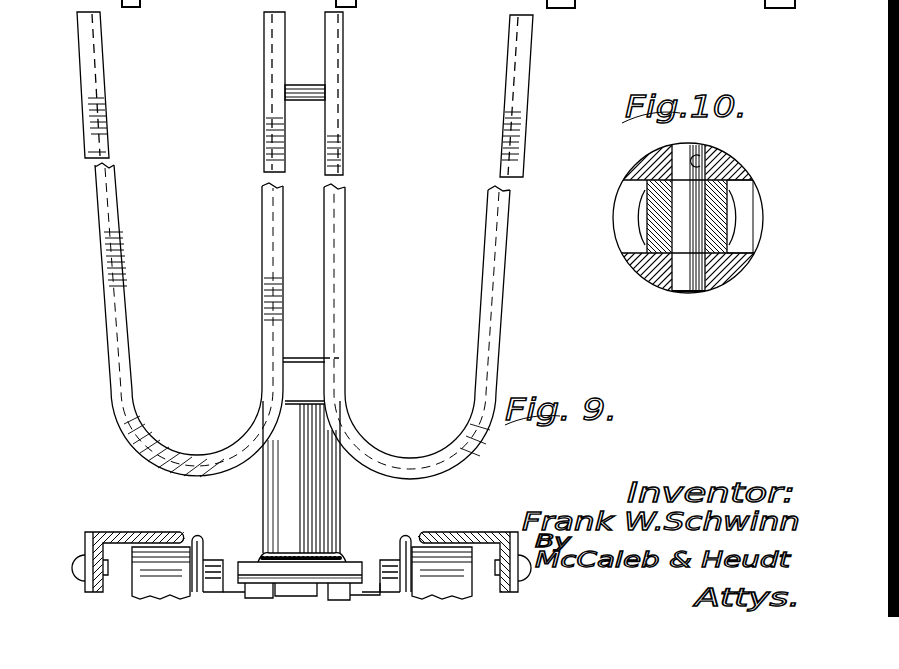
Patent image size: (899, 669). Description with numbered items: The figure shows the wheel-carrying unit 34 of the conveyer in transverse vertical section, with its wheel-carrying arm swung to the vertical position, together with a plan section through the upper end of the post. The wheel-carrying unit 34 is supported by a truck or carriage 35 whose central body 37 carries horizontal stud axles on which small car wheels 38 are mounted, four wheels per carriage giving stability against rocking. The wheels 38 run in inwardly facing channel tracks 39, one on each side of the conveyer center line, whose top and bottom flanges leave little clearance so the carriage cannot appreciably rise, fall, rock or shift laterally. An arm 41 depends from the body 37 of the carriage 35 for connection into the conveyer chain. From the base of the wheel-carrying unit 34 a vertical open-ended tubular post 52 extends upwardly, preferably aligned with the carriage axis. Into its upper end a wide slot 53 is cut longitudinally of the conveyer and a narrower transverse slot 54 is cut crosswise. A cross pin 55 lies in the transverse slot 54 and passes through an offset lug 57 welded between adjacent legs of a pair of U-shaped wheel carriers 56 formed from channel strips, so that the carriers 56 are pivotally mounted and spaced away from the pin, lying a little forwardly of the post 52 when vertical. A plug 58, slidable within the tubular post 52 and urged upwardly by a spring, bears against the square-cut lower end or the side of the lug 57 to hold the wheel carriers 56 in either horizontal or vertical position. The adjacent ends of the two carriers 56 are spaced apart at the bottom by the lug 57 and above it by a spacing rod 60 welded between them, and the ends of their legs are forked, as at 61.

In FIG. 9, the wheel-carrying unit 34 is at (350, 529).
In FIG. 9, the truck or carriage 35 is at (253, 576).
In FIG. 9, the central body 37 is at (345, 572).
In FIG. 9, the car wheel 38 is at (302, 573).
In FIG. 9, the channel track 39 is at (150, 533).
In FIG. 9, the arm 41 is at (292, 595).
In FIG. 9, the tubular post 52 is at (286, 476).
In FIG. 10, the tubular post 52 is at (722, 276).
In FIG. 10, the wide slot 53 is at (740, 183).
In FIG. 10, the transverse slot 54 is at (696, 158).
In FIG. 10, the cross pin 55 is at (683, 282).
In FIG. 9, the U-shaped wheel carrier 56 is at (262, 271).
In FIG. 9, the offset lug 57 is at (300, 367).
In FIG. 10, the offset lug 57 is at (718, 223).
In FIG. 10, the plug 58 is at (646, 222).
In FIG. 9, the spacing rod 60 is at (306, 87).
In FIG. 9, the forked end 61 is at (262, 58).